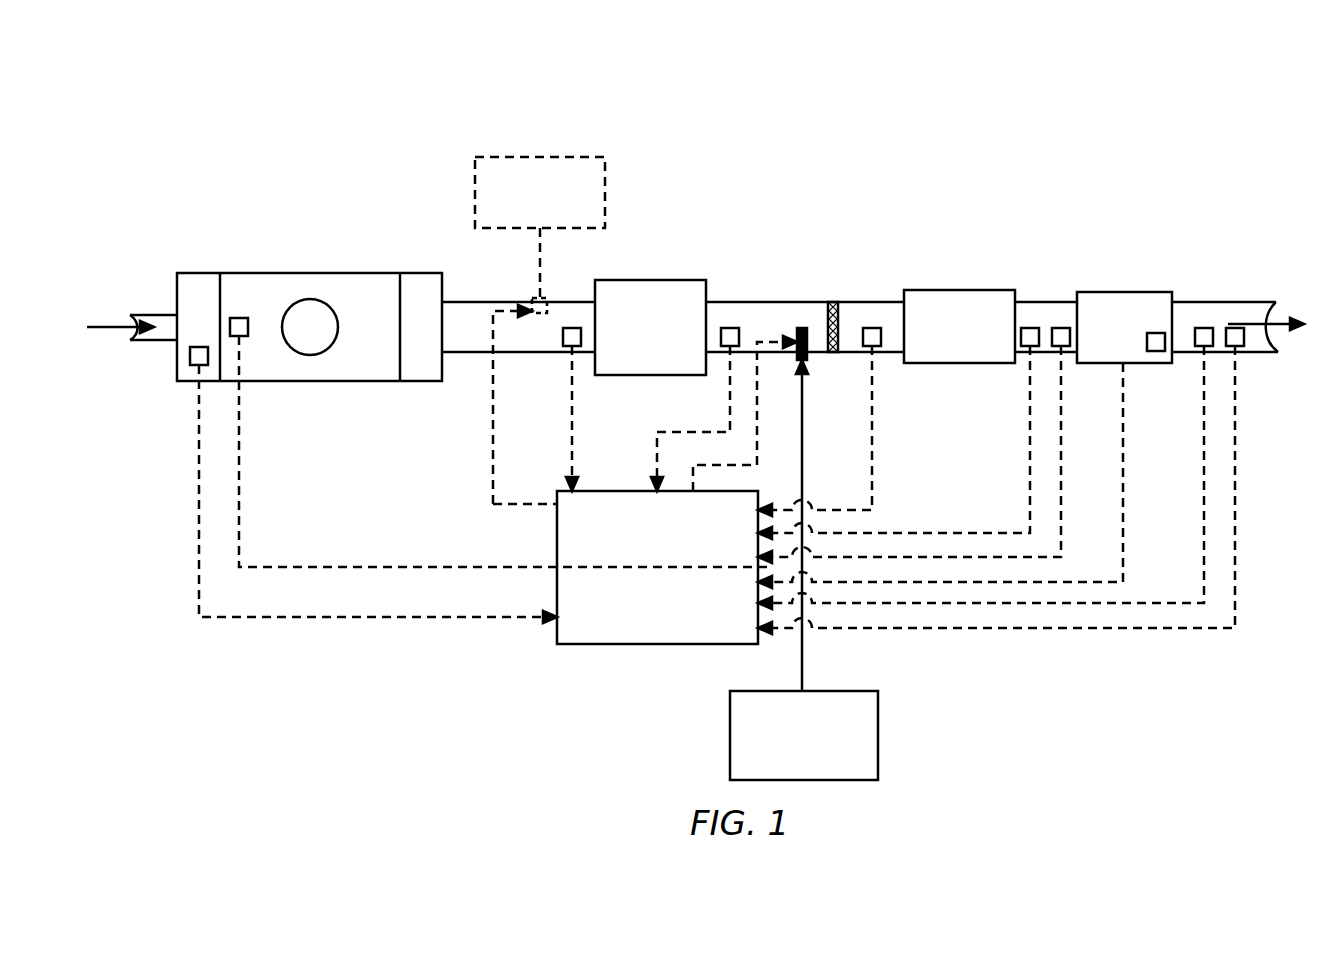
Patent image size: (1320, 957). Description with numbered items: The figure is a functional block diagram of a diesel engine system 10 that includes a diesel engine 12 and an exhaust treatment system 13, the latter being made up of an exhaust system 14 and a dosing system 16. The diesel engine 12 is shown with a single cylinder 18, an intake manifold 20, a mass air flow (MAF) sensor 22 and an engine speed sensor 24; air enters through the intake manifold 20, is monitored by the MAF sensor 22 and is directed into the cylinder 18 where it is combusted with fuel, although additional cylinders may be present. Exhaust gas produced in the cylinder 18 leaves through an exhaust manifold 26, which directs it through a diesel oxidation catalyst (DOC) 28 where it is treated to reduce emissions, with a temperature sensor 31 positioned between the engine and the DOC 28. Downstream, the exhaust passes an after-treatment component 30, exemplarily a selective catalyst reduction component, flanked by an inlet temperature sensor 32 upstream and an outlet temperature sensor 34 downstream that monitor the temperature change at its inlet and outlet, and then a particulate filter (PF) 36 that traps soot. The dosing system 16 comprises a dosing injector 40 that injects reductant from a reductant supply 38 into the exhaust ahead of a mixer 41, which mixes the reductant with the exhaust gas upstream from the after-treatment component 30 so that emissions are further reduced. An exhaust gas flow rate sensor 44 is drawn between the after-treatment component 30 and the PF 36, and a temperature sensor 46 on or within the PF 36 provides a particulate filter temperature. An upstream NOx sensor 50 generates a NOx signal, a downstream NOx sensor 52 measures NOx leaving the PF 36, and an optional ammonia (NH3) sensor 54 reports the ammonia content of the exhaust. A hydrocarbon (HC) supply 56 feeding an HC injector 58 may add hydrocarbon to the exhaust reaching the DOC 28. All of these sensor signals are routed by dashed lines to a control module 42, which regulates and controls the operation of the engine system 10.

The diesel engine system 10 is at (449, 157).
The diesel engine 12 is at (278, 273).
The exhaust treatment system 13 is at (1025, 183).
The exhaust system 14 is at (1074, 422).
The dosing system 16 is at (980, 652).
The cylinder 18 is at (318, 299).
The intake manifold 20 is at (109, 324).
The mass air flow (MAF) sensor 22 is at (190, 355).
The engine speed sensor 24 is at (239, 318).
The exhaust manifold 26 is at (416, 273).
The diesel oxidation catalyst (DOC) 28 is at (648, 280).
The after-treatment component 30 is at (958, 290).
The temperature sensor 31 is at (563, 345).
The inlet temperature sensor 32 is at (731, 328).
The outlet temperature sensor 34 is at (1030, 328).
The particulate filter (PF) 36 is at (1125, 292).
The reductant supply 38 is at (853, 691).
The dosing injector 40 is at (802, 328).
The mixer 41 is at (834, 302).
The control module 42 is at (557, 522).
The exhaust gas flow rate sensor 44 is at (1061, 328).
The temperature sensor 46 is at (1156, 333).
The upstream NOx sensor 50 is at (872, 328).
The downstream NOx sensor 52 is at (1195, 345).
The ammonia (NH3) sensor 54 is at (1245, 345).
The hydrocarbon (HC) supply 56 is at (577, 157).
The HC injector 58 is at (547, 299).